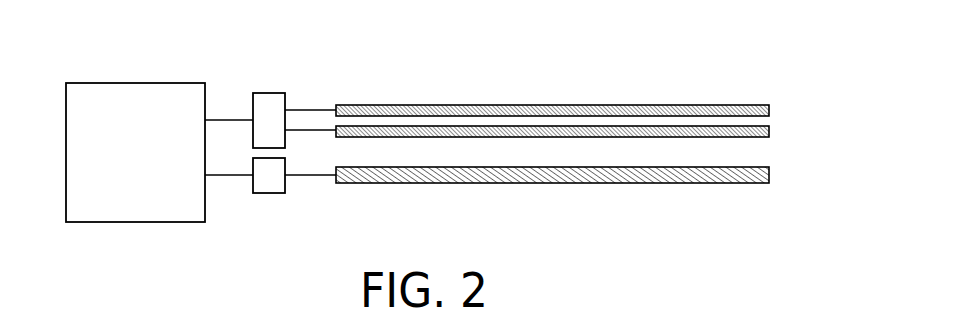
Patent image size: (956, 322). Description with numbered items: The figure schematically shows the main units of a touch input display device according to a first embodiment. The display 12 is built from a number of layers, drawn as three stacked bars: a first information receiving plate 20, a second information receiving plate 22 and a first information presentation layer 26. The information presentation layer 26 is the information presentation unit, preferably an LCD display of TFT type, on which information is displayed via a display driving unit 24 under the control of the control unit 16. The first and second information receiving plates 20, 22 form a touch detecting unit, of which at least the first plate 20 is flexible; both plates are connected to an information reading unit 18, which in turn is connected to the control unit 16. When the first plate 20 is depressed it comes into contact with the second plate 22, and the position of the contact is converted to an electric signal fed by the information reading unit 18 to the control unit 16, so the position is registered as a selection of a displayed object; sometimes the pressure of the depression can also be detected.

The display 12 is at (585, 147).
The control unit 16 is at (137, 82).
The information reading unit 18 is at (270, 92).
The first information receiving plate 20 is at (620, 105).
The second information receiving plate 22 is at (532, 128).
The display driving unit 24 is at (270, 194).
The first information presentation layer 26 is at (578, 184).